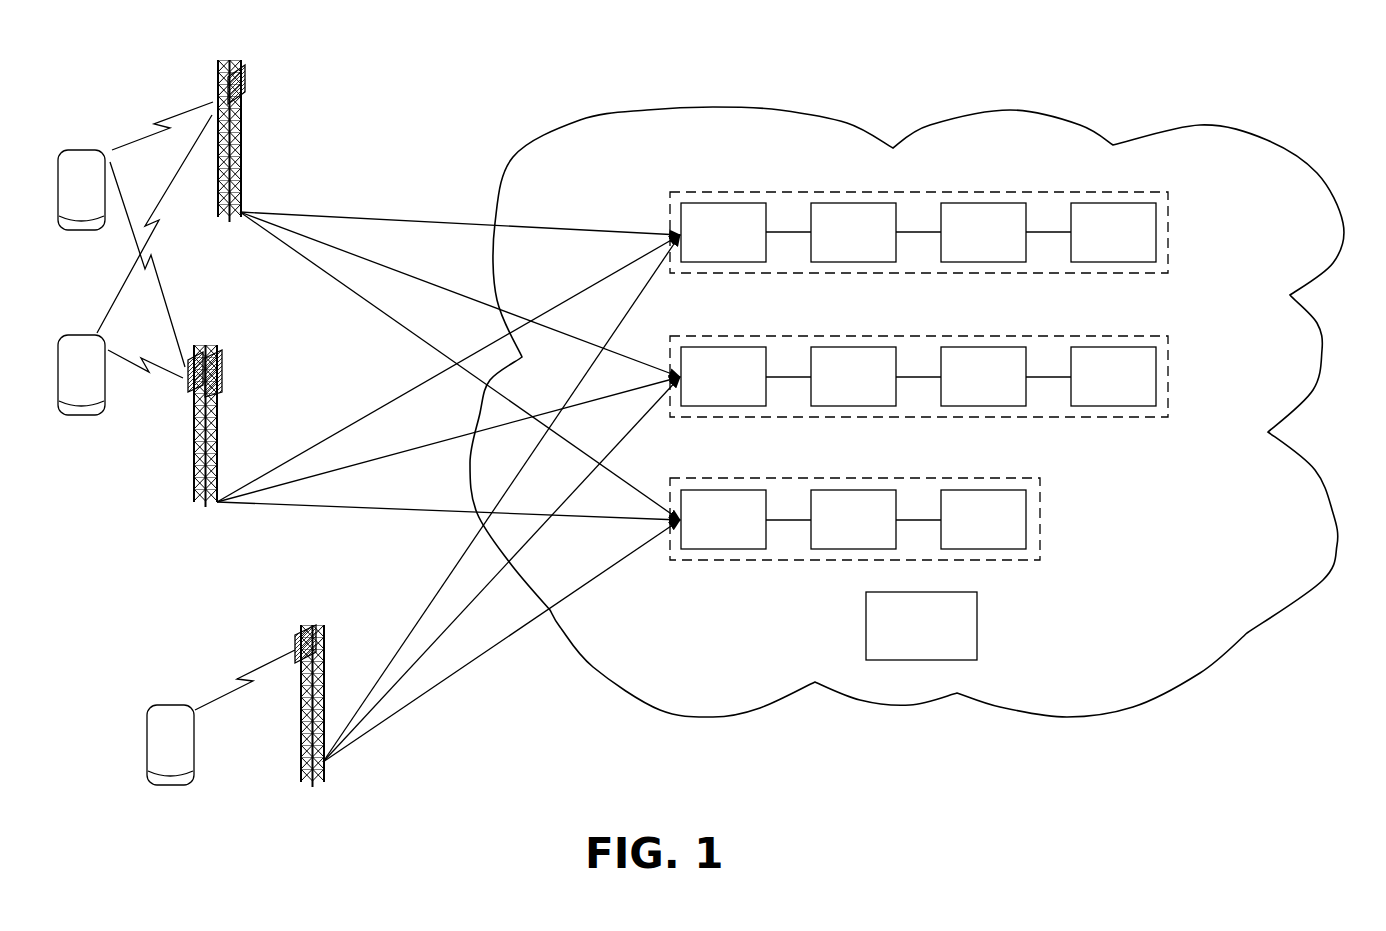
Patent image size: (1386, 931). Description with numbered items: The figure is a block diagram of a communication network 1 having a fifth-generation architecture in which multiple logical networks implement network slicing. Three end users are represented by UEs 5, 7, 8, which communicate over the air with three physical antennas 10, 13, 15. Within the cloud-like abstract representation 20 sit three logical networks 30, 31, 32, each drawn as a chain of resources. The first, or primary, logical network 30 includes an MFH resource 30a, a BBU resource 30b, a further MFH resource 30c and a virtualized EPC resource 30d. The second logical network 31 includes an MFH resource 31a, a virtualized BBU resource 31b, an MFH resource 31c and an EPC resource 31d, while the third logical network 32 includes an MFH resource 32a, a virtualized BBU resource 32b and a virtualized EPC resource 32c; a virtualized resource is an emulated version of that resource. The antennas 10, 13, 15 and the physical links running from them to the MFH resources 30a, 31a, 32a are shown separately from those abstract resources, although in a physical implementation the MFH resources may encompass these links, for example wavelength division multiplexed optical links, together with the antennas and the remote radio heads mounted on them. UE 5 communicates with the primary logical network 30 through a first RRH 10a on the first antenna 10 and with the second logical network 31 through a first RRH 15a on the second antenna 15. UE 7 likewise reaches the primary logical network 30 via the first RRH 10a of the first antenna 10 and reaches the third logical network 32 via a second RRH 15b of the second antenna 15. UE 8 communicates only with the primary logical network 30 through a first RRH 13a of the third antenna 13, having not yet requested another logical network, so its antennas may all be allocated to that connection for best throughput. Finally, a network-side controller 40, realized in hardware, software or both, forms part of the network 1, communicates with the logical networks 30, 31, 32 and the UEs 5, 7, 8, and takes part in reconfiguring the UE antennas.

The network 1 is at (1045, 52).
The UE 5 is at (90, 203).
The UE 7 is at (90, 388).
The UE 8 is at (177, 758).
The first antenna 10 is at (241, 190).
The first RRH of the first antenna 10a is at (242, 68).
The third antenna 13 is at (299, 760).
The first RRH of the third antenna 13a is at (306, 626).
The second antenna 15 is at (194, 484).
The first RRH of the second antenna 15a is at (222, 373).
The second RRH of the second antenna 15b is at (218, 346).
The abstract representation 20 is at (652, 108).
The first logical network 30 is at (1169, 198).
The MFH resource 30a is at (699, 246).
The BBU resource 30b is at (829, 246).
The MFH resource 30c is at (959, 246).
The virtualized EPC resource 30d is at (1089, 246).
The second logical network 31 is at (1169, 342).
The MFH resource 31a is at (699, 390).
The virtualized BBU resource 31b is at (829, 390).
The MFH resource 31c is at (959, 390).
The EPC resource 31d is at (1089, 390).
The third logical network 32 is at (1041, 484).
The MFH resource 32a is at (699, 533).
The virtualized BBU resource 32b is at (829, 533).
The virtualized EPC resource 32c is at (959, 533).
The network-side controller 40 is at (905, 657).